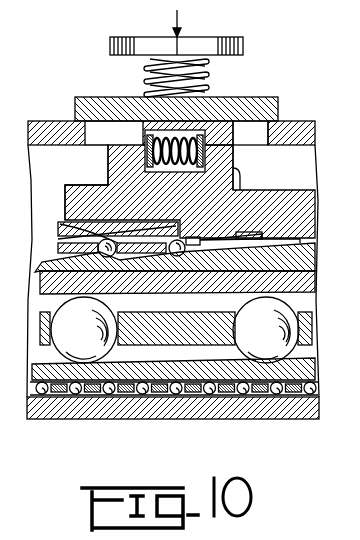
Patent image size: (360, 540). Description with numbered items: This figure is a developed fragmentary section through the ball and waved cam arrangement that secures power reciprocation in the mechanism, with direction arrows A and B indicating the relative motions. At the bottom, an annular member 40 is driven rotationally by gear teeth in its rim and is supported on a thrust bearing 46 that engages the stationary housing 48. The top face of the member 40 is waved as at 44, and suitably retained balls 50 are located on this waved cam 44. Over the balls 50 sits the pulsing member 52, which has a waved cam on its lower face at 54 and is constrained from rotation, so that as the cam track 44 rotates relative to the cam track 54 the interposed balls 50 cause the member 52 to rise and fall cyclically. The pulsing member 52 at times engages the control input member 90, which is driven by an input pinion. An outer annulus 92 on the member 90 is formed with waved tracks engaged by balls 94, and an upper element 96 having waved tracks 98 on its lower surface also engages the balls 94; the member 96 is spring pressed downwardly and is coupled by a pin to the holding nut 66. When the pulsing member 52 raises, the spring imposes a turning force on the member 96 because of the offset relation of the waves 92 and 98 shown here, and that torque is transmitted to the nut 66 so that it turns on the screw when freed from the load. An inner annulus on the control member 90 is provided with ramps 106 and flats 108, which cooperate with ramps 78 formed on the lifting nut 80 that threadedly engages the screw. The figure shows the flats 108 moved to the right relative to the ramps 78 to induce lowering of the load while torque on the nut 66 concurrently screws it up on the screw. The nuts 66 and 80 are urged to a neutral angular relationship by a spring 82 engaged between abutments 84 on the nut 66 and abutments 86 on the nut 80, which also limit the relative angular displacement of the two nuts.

The holding nut 66 is at (232, 101).
The spring 82 is at (144, 133).
The abutments 84 is at (233, 133).
The abutments 86 is at (236, 155).
The lifting nut 80 is at (244, 172).
The ramps 78 is at (262, 233).
The ramps 106 is at (262, 237).
The flats 108 is at (262, 240).
The control input member 90 is at (318, 262).
The pulsing member 52 is at (318, 282).
The waved cam 54 is at (305, 297).
The balls 50 is at (175, 330).
The waved cam 44 is at (316, 360).
The annular member 40 is at (319, 373).
The thrust bearing 46 is at (208, 395).
The stationary housing 48 is at (262, 395).
The balls 94 is at (121, 262).
The outer annulus 92 is at (68, 260).
The waved tracks 98 is at (70, 239).
The upper element 96 is at (75, 225).
The direction A is at (104, 223).
The direction B is at (243, 216).